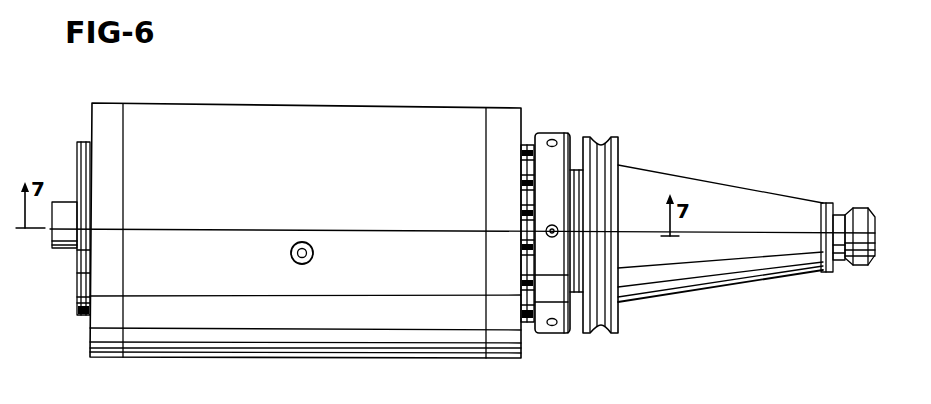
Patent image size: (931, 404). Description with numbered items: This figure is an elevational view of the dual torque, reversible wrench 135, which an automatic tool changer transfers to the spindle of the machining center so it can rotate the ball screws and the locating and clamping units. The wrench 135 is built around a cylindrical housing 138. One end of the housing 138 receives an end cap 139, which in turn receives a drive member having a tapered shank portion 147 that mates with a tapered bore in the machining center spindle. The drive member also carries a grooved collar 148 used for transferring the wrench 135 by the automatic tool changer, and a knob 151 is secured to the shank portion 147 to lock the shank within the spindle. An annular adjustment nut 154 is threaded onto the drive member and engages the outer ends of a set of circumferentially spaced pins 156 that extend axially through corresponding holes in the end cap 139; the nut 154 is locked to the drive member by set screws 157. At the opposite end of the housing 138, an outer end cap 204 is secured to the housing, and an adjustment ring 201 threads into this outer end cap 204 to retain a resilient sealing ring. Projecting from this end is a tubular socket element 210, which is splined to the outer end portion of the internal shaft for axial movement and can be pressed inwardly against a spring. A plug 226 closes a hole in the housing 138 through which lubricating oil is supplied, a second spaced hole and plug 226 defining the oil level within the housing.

The dual torque reversible wrench 135 is at (307, 94).
The outer end cap 204 is at (108, 110).
The adjustment ring 201 is at (82, 141).
The tubular socket element 210 is at (66, 251).
The plug 226 is at (290, 255).
The cylindrical housing 138 is at (363, 107).
The end cap 139 is at (500, 113).
The circumferentially spaced pins 156 is at (520, 305).
The annular adjustment nut 154 is at (558, 132).
The set screws 157 is at (546, 228).
The grooved collar 148 is at (612, 137).
The tapered shank portion 147 is at (733, 192).
The knob 151 is at (868, 209).